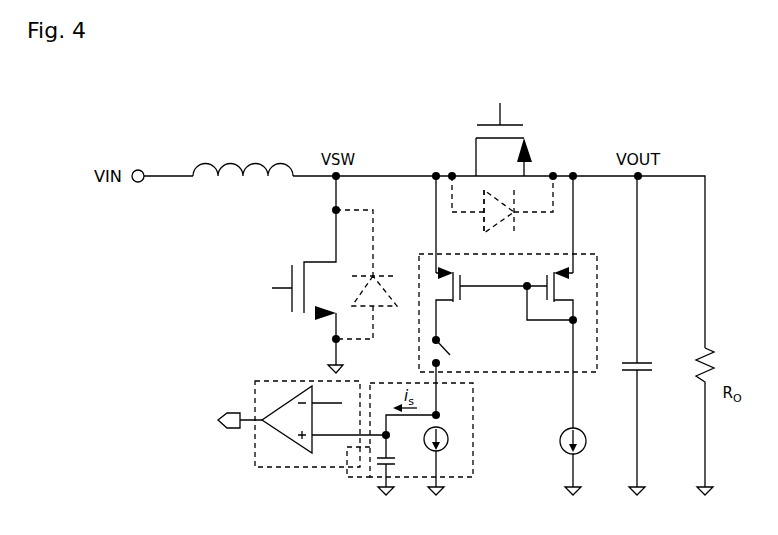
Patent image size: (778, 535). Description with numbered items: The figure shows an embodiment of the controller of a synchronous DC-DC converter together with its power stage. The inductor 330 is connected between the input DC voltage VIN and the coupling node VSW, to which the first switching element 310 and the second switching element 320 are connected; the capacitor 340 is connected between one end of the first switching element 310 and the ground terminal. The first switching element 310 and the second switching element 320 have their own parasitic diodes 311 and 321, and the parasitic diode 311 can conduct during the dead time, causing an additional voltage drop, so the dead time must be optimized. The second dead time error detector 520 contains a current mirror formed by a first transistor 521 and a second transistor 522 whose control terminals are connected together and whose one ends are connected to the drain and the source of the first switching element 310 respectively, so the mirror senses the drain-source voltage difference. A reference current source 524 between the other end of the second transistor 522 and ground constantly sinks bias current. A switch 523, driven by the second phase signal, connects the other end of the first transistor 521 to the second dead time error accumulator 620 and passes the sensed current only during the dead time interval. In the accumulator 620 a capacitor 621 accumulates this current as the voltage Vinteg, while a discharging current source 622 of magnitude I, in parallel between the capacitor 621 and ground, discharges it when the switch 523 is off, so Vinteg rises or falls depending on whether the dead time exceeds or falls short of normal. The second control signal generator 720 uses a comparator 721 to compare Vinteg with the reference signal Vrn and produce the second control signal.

The first switching element 310 is at (525, 126).
The parasitic diode 311 is at (514, 195).
The second switching element 320 is at (304, 262).
The parasitic diode 321 is at (373, 276).
The inductor 330 is at (262, 163).
The capacitor 340 is at (645, 363).
The second dead time error detector 520 is at (597, 254).
The first transistor 521 is at (461, 299).
The second transistor 522 is at (554, 304).
The switch 523 is at (451, 352).
The reference current source 524 is at (563, 431).
The second dead time error accumulator 620 is at (473, 463).
The capacitor 621 is at (396, 465).
The discharging current source 622 is at (448, 433).
The second control signal generator 720 is at (255, 456).
The comparator 721 is at (289, 399).